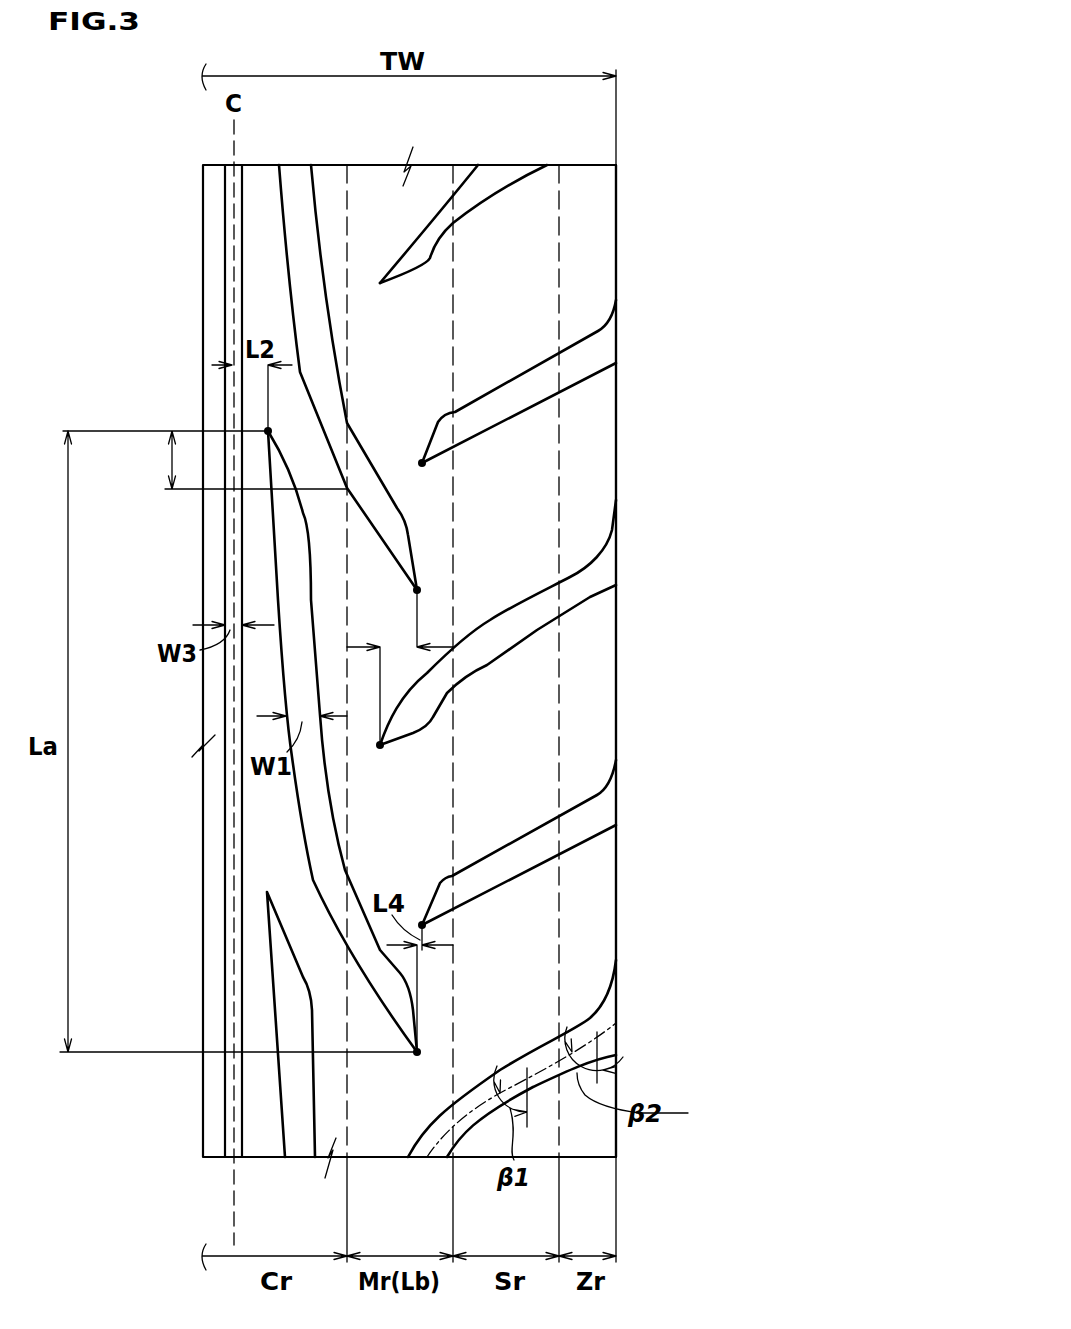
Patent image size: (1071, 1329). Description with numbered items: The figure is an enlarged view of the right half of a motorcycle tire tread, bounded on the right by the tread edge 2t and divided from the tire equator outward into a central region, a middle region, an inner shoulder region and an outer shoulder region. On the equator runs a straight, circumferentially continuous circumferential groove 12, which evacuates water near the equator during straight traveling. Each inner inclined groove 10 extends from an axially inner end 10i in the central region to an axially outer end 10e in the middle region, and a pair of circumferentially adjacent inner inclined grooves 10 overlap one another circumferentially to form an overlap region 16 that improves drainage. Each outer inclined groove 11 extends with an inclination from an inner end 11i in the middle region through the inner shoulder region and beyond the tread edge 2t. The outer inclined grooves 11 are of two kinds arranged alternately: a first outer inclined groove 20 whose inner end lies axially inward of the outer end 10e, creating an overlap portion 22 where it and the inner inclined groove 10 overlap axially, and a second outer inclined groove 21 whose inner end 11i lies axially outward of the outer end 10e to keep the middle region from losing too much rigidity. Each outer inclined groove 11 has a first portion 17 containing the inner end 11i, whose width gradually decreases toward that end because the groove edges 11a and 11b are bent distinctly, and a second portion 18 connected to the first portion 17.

The tread edge 2t is at (616, 210).
The inner inclined groove 10 is at (289, 266).
The axially inner end of the inner inclined groove 10i is at (268, 431).
The axially outer end of the inner inclined groove 10e is at (417, 590).
The outer inclined groove 11 is at (599, 661).
The first outer inclined groove 20 is at (601, 828).
The second outer inclined groove 21 is at (536, 388).
The groove edge of the outer inclined groove 11a is at (508, 607).
The groove edge of the outer inclined groove 11b is at (413, 733).
The inner end of the outer inclined groove 11i is at (422, 463).
The circumferential groove 12 is at (220, 1098).
The overlap region 16 is at (205, 460).
The first portion 17 is at (428, 707).
The second portion 18 is at (509, 643).
The overlap portion 22 is at (394, 667).